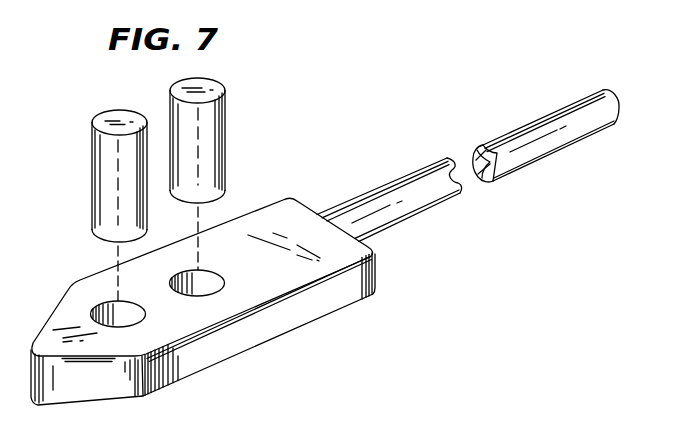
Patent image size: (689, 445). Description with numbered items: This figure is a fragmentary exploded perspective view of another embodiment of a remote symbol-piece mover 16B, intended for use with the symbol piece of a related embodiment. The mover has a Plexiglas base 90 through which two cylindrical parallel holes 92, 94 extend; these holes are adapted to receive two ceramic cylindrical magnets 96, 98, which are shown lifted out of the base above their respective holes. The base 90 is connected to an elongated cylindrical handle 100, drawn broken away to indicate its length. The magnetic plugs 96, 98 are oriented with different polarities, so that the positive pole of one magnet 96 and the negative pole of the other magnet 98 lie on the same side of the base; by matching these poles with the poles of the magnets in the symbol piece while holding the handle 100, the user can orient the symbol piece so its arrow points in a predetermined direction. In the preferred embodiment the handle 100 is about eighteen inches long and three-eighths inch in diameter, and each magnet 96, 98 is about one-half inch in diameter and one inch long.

The remote symbol-piece mover 16B is at (326, 122).
The Plexiglas base 90 is at (307, 207).
The cylindrical hole 92 is at (107, 300).
The cylindrical hole 94 is at (203, 270).
The ceramic cylindrical magnet 96 is at (118, 109).
The ceramic cylindrical magnet 98 is at (223, 90).
The elongated cylindrical handle 100 is at (413, 215).